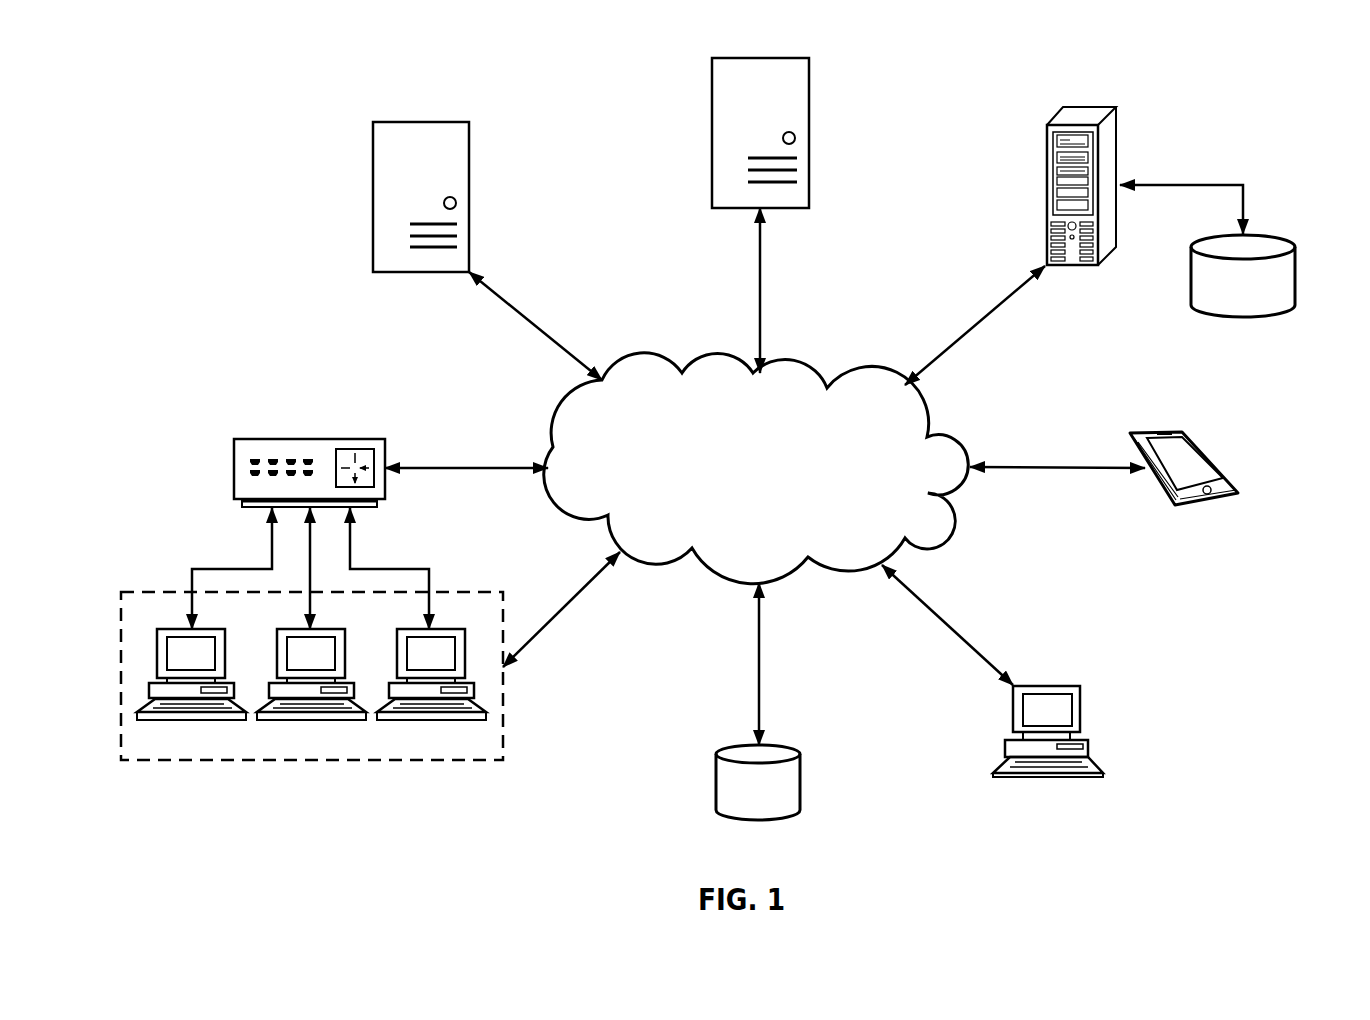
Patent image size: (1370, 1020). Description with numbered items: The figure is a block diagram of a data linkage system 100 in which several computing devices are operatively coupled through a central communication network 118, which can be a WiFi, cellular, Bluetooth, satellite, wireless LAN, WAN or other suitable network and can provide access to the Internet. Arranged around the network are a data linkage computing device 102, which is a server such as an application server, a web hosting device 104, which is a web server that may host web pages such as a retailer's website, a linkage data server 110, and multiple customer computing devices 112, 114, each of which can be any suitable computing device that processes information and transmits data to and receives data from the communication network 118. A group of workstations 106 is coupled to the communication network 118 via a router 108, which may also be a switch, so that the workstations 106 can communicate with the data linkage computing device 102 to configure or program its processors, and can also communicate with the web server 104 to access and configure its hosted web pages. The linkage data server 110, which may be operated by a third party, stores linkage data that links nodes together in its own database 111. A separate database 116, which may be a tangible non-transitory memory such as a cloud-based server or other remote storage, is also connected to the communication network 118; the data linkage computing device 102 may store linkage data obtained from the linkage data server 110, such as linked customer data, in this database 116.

The data linkage system 100 is at (1152, 46).
The data linkage computing device 102 is at (785, 57).
The web hosting device 104 is at (395, 122).
The workstations 106 is at (158, 592).
The router 108 is at (260, 438).
The linkage data server 110 is at (1105, 106).
The database 111 is at (1285, 237).
The customer computing device 112 is at (1207, 456).
The customer computing device 114 is at (1072, 686).
The database 116 is at (789, 747).
The communication network 118 is at (800, 364).